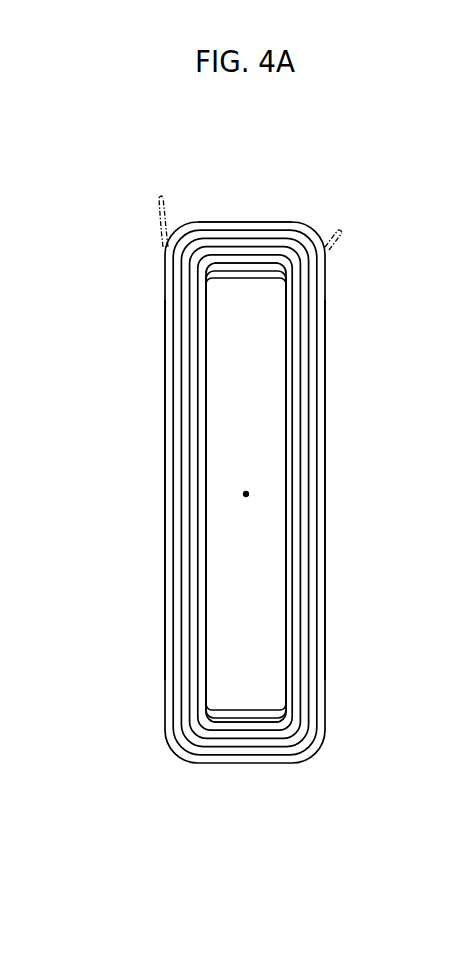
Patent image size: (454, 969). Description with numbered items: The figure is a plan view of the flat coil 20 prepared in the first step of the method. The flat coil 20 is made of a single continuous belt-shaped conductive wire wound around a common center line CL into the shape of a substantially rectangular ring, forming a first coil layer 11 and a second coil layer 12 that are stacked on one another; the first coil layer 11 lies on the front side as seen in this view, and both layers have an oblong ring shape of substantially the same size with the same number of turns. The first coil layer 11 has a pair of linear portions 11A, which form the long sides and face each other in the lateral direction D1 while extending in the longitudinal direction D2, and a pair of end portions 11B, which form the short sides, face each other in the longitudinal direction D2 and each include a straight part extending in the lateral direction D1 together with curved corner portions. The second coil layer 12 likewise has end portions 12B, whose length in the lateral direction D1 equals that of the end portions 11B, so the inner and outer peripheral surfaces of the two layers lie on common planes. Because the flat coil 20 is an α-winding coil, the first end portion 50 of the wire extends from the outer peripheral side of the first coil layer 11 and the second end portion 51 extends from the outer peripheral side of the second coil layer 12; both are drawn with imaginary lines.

The flat coil 20 is at (248, 421).
The first coil layer 11 is at (288, 458).
The second coil layer 12 is at (314, 220).
The linear portion 11A is at (187, 402).
The end portion 11B is at (250, 262).
The end portion 12B is at (216, 218).
The first end portion 50 is at (341, 237).
The second end portion 51 is at (166, 216).
The center line CL is at (246, 492).
The lateral direction D1 is at (293, 808).
The longitudinal direction D2 is at (108, 470).